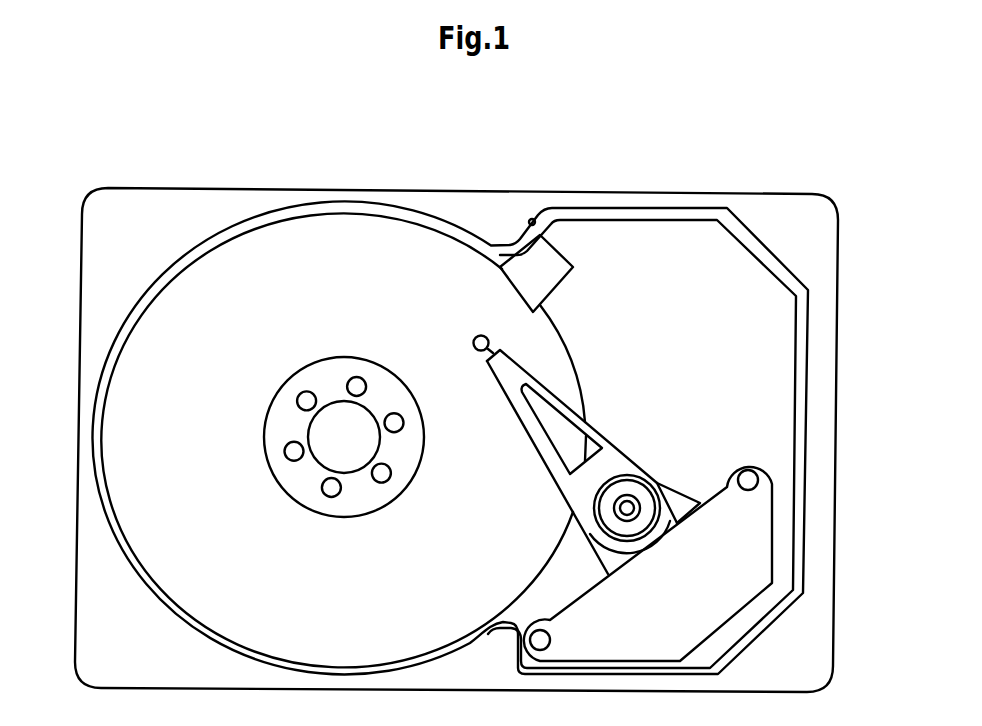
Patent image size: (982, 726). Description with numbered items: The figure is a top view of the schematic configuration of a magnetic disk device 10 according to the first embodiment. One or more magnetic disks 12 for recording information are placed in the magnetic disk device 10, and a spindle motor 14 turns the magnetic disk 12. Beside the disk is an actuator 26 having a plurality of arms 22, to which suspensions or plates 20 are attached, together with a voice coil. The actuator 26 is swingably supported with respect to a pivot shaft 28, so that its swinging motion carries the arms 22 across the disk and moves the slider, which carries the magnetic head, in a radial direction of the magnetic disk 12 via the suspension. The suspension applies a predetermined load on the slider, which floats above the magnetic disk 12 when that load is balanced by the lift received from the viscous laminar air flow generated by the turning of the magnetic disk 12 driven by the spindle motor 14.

The magnetic disk device 10 is at (540, 188).
The magnetic disk 12 is at (263, 347).
The spindle motor 14 is at (337, 438).
The plate 20 is at (473, 342).
The arm 22 is at (567, 412).
The actuator 26 is at (628, 505).
The pivot shaft 28 is at (658, 485).